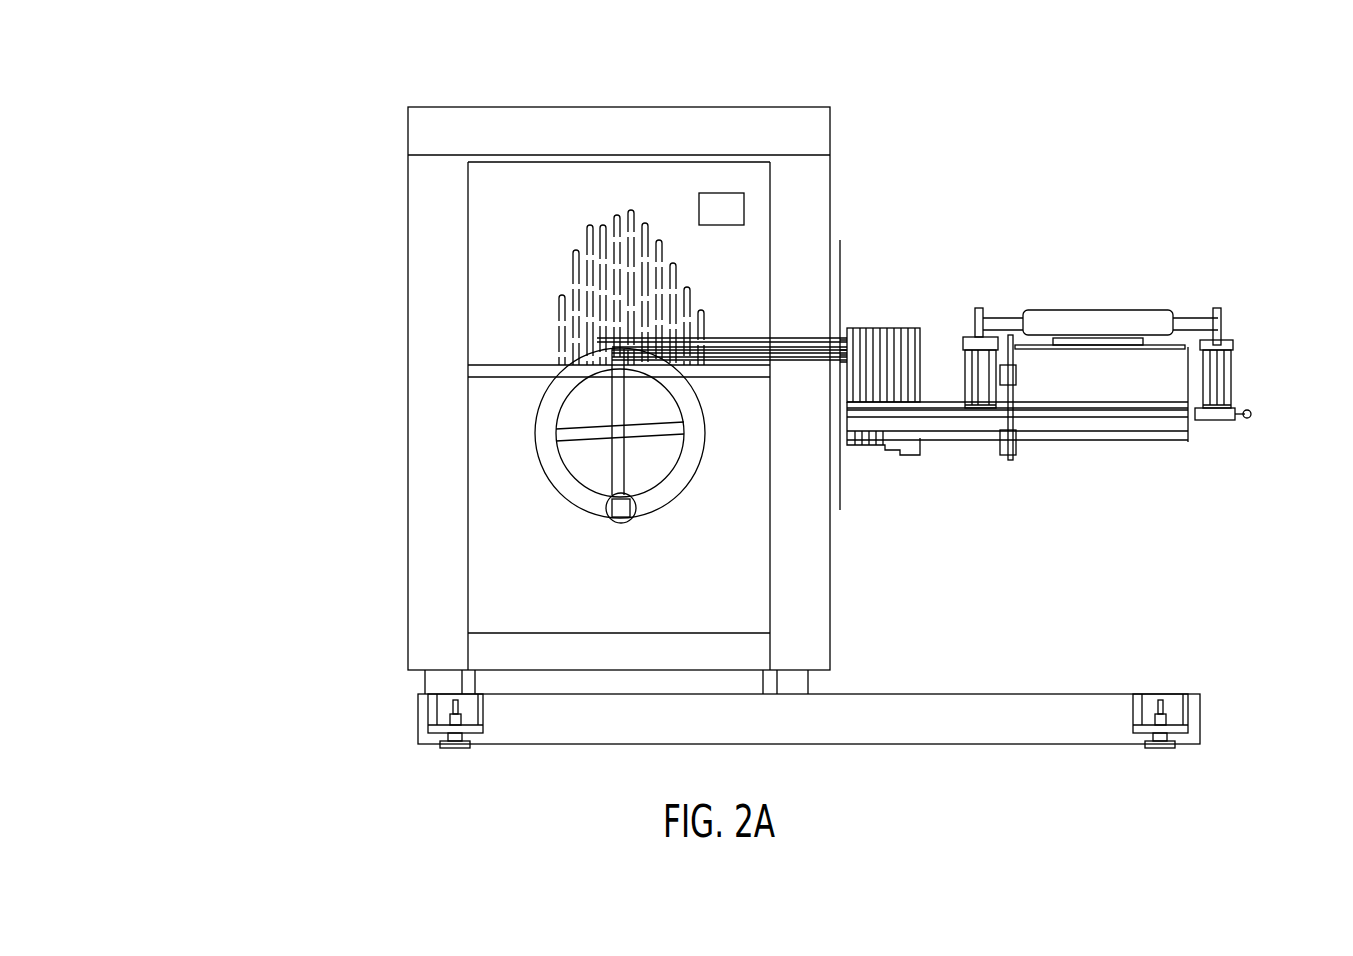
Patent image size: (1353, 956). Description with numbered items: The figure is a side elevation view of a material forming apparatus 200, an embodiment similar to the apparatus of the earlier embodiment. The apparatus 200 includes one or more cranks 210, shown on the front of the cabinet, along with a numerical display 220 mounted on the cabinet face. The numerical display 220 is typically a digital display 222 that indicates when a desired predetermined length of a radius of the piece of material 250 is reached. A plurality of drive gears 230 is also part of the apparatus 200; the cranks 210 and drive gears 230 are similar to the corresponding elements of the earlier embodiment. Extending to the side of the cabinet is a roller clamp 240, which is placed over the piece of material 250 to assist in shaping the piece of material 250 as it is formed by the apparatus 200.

The material forming apparatus 200 is at (247, 233).
The cranks 210 is at (532, 502).
The numerical display 220 is at (819, 132).
The digital display 222 is at (783, 215).
The drive gears 230 is at (568, 249).
The roller clamp 240 is at (1162, 303).
The piece of material 250 is at (1183, 347).